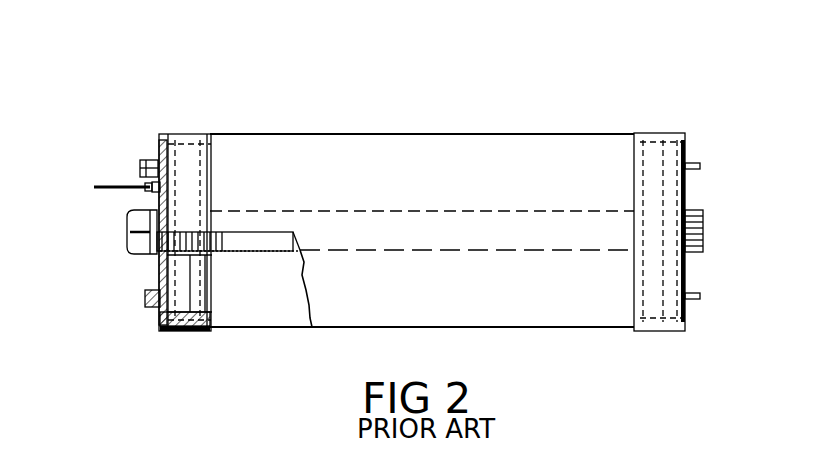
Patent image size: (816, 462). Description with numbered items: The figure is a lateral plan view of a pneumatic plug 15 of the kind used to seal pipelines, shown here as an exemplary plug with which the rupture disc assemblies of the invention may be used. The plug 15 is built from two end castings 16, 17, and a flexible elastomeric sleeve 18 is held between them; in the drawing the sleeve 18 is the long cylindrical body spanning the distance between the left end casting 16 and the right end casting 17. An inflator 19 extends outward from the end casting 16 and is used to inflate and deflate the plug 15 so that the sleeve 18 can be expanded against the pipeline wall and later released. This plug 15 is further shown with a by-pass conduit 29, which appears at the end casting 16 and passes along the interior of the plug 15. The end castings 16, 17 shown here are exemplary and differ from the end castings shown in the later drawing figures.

The pneumatic plug 15 is at (453, 122).
The end casting 16 is at (158, 122).
The end casting 17 is at (673, 122).
The elastomeric sleeve 18 is at (337, 134).
The inflator 19 is at (113, 186).
The by-pass conduit 29 is at (125, 233).